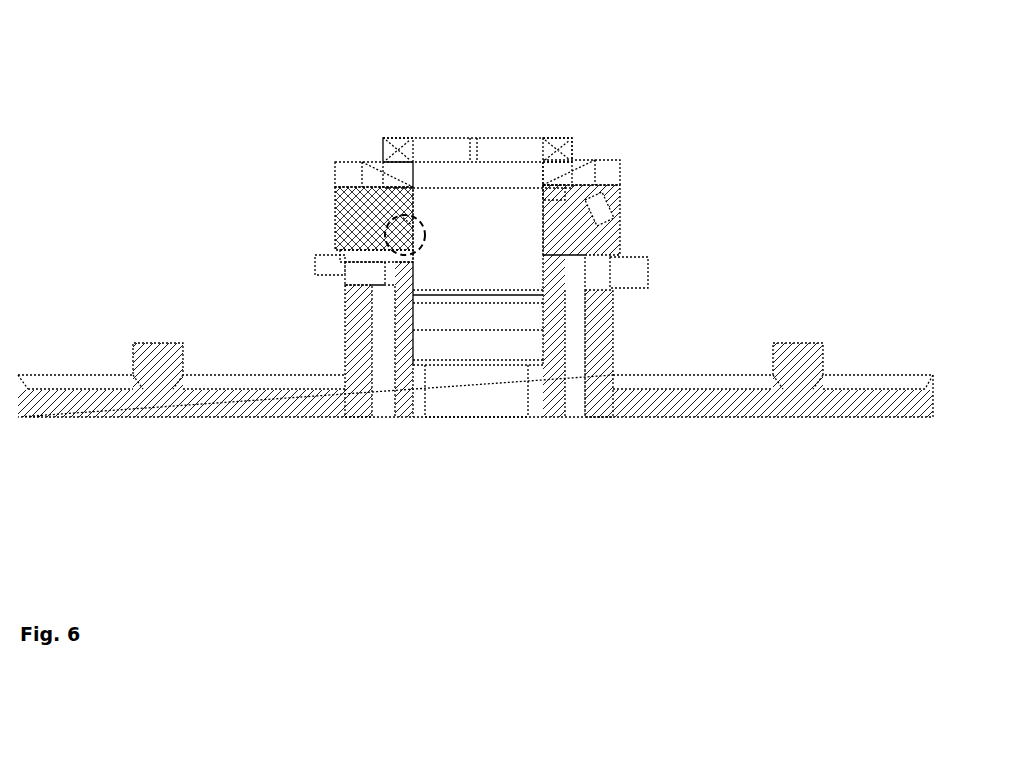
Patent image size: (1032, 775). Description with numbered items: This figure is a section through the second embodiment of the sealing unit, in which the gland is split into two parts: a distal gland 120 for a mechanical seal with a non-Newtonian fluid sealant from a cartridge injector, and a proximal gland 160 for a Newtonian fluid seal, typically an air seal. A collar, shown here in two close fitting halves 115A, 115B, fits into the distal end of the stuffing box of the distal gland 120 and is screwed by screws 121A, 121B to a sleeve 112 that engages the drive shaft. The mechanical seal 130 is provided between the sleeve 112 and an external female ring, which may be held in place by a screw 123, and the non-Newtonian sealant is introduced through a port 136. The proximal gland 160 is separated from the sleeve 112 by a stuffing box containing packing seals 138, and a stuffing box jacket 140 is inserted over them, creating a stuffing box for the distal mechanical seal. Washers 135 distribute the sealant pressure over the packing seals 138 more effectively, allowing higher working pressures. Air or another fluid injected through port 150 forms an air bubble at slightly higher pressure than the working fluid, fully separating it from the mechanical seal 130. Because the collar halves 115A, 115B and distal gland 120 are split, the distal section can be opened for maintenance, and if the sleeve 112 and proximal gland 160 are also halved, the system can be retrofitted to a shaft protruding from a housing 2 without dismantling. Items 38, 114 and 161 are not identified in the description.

The housing 2 is at (807, 322).
The seal 38 is at (567, 193).
The sleeve 112 is at (507, 176).
The shaft 114 is at (445, 300).
The collar half 115A is at (401, 150).
The collar half 115B is at (567, 150).
The distal gland 120 is at (620, 248).
The screw 121A is at (404, 180).
The screw 121B is at (563, 178).
The screw 123 is at (610, 215).
The mechanical seal 130 is at (428, 222).
The washer 135 is at (418, 215).
The port 136 is at (395, 213).
The packing seal 138 is at (565, 333).
The stuffing box jacket 140 is at (350, 255).
The port 150 is at (330, 272).
The proximal gland 160 is at (350, 287).
The mounting bracket 161 is at (645, 272).